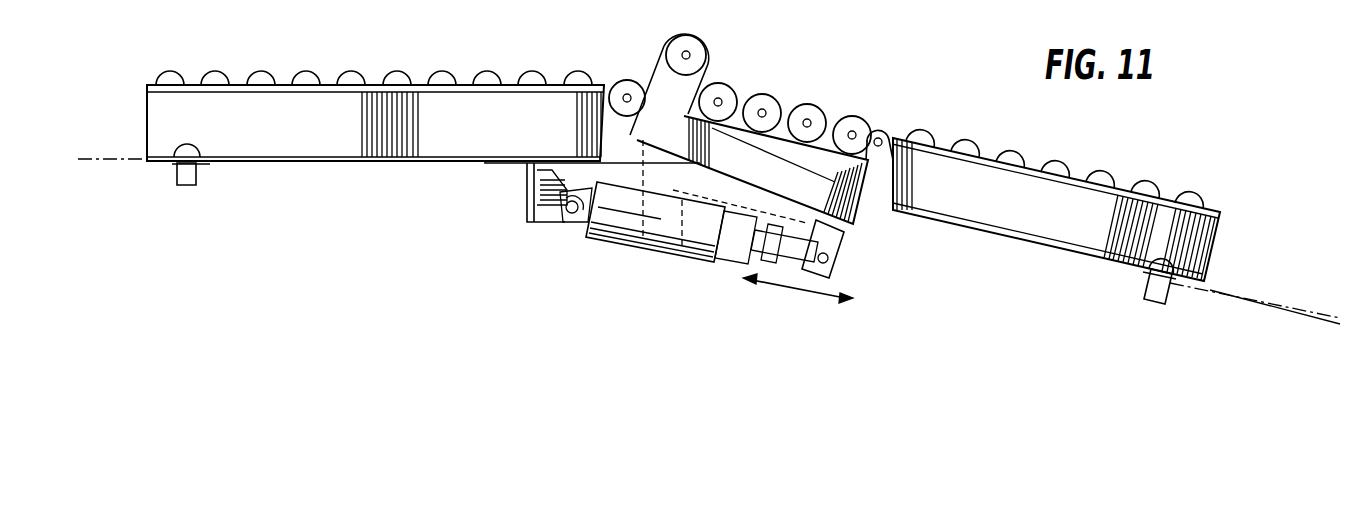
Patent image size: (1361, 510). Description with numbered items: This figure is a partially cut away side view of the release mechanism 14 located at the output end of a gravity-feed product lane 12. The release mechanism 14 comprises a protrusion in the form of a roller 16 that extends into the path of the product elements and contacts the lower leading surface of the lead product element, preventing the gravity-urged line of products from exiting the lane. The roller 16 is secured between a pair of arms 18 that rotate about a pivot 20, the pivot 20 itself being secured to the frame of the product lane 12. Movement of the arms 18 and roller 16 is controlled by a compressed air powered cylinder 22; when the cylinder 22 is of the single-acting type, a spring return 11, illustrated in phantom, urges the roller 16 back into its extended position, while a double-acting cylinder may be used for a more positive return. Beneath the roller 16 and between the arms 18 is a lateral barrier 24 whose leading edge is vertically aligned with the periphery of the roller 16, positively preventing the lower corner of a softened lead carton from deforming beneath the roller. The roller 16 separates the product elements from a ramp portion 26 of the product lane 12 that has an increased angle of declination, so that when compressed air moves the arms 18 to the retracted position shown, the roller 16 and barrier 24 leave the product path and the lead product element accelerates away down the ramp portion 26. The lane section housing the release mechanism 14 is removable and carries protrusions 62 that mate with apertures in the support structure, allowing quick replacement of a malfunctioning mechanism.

The spring return 11 is at (696, 272).
The product lane 12 is at (353, 135).
The release mechanism 14 is at (604, 258).
The roller 16 is at (704, 40).
The arms 18 is at (842, 218).
The pivot 20 is at (887, 135).
The compressed air powered cylinder 22 is at (656, 251).
The lateral barrier 24 is at (657, 73).
The ramp portion 26 is at (1007, 188).
The protrusions 62 is at (196, 177).